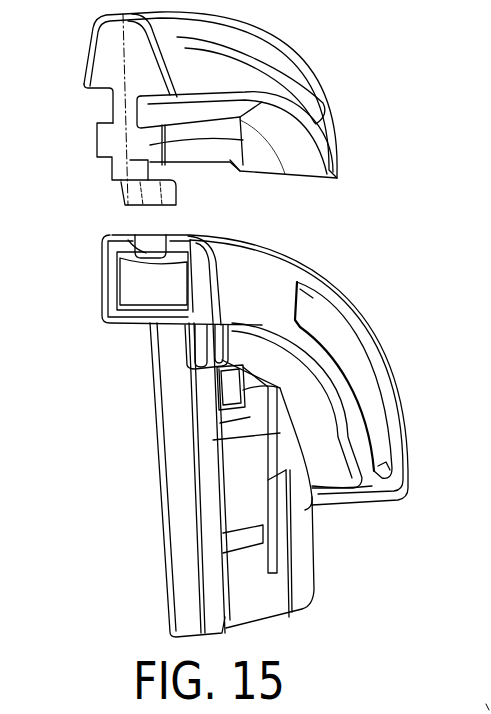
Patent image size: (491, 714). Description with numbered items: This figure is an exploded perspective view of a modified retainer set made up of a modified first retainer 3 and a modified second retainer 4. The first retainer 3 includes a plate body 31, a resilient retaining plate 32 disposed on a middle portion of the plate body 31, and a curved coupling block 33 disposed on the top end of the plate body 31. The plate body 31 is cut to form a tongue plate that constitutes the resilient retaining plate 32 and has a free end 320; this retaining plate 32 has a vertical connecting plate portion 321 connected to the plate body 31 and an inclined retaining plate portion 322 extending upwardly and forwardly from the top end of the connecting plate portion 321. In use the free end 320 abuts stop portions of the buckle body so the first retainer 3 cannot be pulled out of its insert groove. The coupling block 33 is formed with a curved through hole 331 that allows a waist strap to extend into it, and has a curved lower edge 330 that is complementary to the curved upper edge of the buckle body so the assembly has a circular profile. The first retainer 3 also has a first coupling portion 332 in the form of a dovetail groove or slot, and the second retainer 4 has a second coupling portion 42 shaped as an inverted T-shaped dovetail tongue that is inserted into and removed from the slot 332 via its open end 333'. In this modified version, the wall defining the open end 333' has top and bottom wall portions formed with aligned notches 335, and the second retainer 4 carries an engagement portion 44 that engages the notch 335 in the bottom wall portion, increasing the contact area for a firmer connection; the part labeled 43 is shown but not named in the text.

The first retainer 3 is at (368, 311).
The second retainer 4 is at (300, 42).
The plate body 31 is at (298, 567).
The resilient retaining plate 32 is at (255, 513).
The curved coupling block 33 is at (250, 277).
The second coupling portion 42 is at (166, 138).
The left block 43 is at (90, 56).
The engagement portion 44 is at (137, 172).
The free end 320 is at (270, 422).
The vertical connecting plate portion 321 is at (243, 562).
The inclined retaining plate portion 322 is at (302, 479).
The curved lower edge 330 is at (318, 382).
The curved through hole 331 is at (313, 312).
The first coupling portion 332 is at (137, 277).
The open end 333' is at (120, 308).
The notch 335 is at (145, 248).